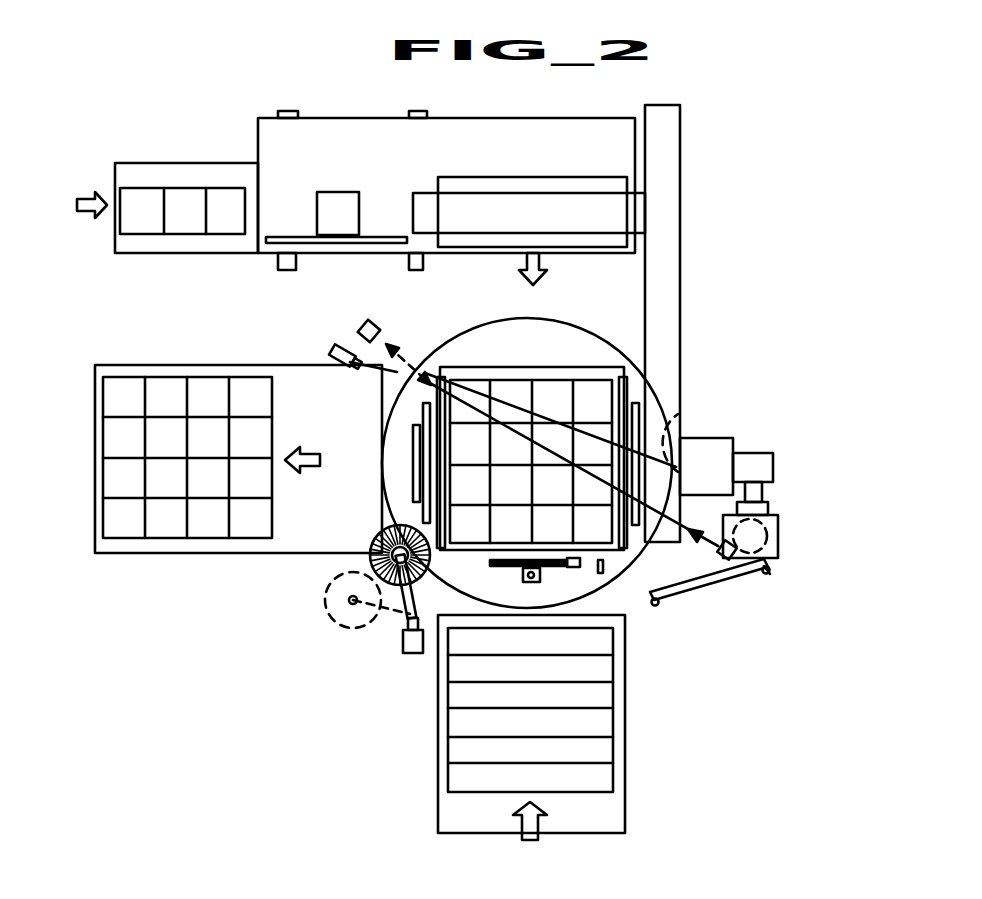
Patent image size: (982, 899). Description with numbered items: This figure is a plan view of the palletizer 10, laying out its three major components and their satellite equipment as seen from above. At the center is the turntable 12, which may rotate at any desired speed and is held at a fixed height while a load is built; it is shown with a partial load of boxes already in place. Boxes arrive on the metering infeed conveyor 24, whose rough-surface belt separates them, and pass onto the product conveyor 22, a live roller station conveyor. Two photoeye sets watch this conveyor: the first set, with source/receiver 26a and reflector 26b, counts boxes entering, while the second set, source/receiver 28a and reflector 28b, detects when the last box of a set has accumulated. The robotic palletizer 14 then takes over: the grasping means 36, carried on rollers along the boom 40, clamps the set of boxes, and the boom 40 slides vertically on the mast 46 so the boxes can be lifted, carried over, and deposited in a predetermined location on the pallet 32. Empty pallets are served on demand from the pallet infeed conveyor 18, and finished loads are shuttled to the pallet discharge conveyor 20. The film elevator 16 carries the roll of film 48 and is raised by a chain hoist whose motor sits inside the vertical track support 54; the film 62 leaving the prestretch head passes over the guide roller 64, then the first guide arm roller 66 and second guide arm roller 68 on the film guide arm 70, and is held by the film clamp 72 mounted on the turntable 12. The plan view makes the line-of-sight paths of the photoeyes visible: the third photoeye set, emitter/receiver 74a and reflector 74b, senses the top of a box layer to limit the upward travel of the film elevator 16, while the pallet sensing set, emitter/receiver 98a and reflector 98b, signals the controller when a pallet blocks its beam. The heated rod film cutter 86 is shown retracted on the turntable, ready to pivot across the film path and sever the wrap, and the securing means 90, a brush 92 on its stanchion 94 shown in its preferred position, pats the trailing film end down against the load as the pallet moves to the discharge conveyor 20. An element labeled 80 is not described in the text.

The palletizer 10 is at (138, 294).
The turntable 12 is at (566, 318).
The robotic palletizer 14 is at (726, 435).
The film elevator 16 is at (779, 511).
The pallet infeed conveyor 18 is at (438, 776).
The pallet discharge conveyor 20 is at (160, 363).
The product conveyor 22 is at (538, 118).
The metering infeed conveyor 24 is at (144, 163).
The source/receiver component of first photoeye set 26a is at (276, 268).
The reflector of first photoeye set 26b is at (292, 94).
The source/receiver component of second photoeye set 28a is at (424, 270).
The reflector of second photoeye set 28b is at (425, 112).
The pallet 32 is at (455, 724).
The grasping means 36 is at (497, 178).
The boom 40 is at (682, 152).
The mast 46 is at (735, 440).
The roll of film 48 is at (783, 520).
The vertical track support 54 is at (775, 463).
The film 62 is at (728, 585).
The guide roller 64 is at (770, 567).
The first guide arm roller 66 is at (766, 575).
The second guide arm roller 68 is at (655, 606).
The film guide arm 70 is at (703, 582).
The film clamp 72 is at (522, 576).
The source/receiver component of third photoeye set 74a is at (780, 548).
The reflector of third photoeye set 74b is at (375, 311).
The stop pin 80 is at (608, 568).
The heated rod film cutter 86 is at (508, 557).
The securing means 90 is at (374, 535).
The brush 92 is at (372, 562).
The stanchion 94 is at (402, 642).
The pallet sensing photoeye emitter/receiver 98a is at (343, 346).
The pallet sensing photoeye reflector 98b is at (676, 416).